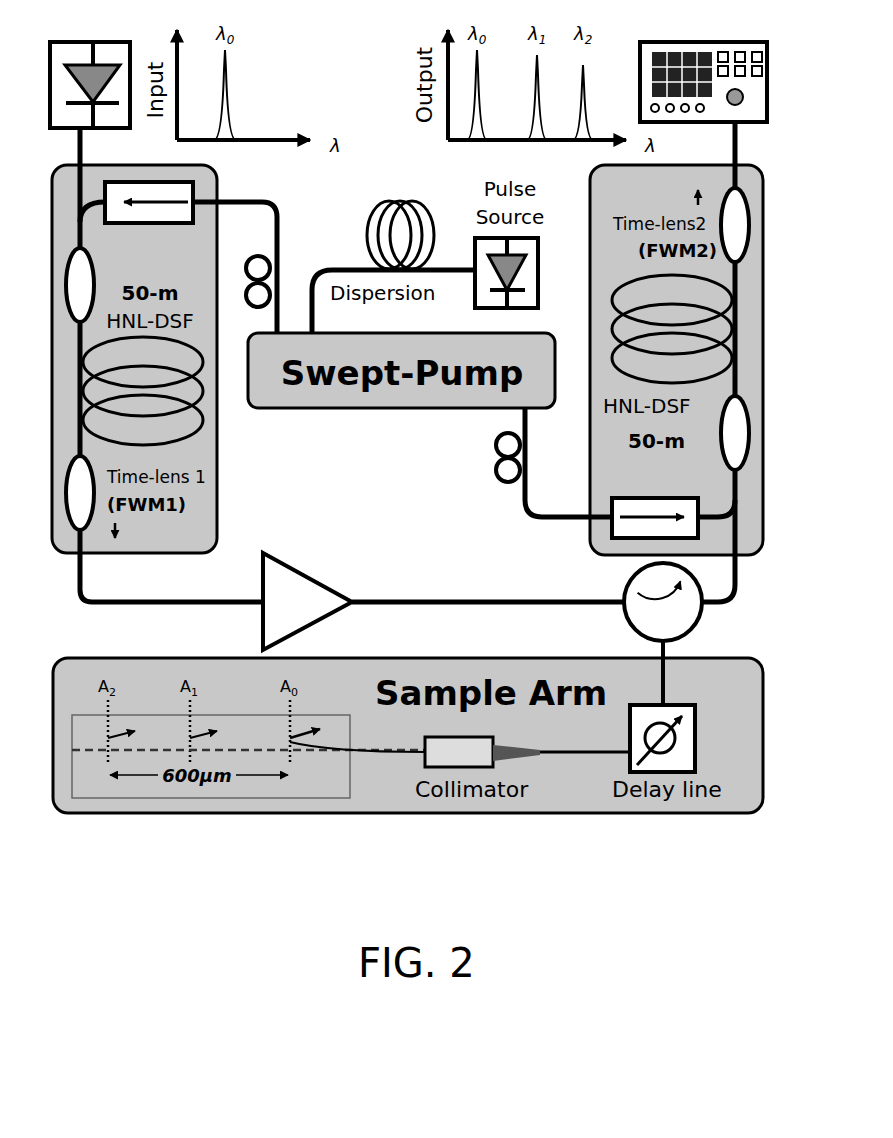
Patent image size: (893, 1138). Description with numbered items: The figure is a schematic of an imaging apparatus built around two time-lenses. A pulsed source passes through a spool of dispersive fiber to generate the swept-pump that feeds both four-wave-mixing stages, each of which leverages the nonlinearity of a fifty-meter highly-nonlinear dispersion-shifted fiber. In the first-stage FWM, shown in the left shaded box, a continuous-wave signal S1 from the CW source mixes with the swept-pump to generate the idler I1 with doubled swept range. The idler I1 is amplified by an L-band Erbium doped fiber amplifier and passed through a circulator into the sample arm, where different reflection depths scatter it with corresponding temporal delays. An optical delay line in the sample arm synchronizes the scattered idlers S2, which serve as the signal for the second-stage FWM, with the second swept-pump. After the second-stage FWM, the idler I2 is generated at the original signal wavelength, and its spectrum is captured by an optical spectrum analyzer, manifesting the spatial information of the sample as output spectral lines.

The signal S1 is at (90, 84).
The idler I1 is at (362, 601).
The scattered idlers S2 is at (610, 570).
The idler I2 is at (703, 84).